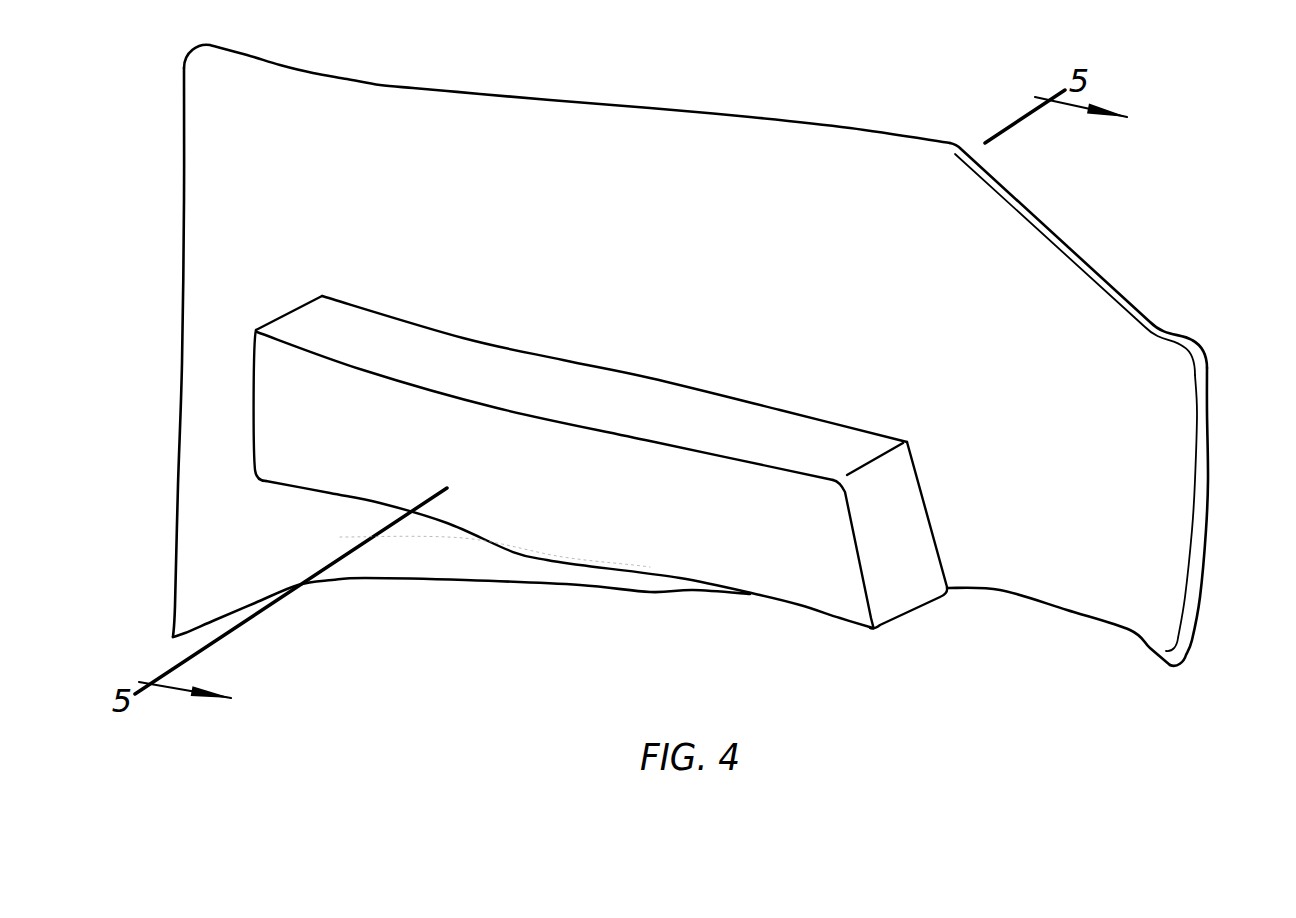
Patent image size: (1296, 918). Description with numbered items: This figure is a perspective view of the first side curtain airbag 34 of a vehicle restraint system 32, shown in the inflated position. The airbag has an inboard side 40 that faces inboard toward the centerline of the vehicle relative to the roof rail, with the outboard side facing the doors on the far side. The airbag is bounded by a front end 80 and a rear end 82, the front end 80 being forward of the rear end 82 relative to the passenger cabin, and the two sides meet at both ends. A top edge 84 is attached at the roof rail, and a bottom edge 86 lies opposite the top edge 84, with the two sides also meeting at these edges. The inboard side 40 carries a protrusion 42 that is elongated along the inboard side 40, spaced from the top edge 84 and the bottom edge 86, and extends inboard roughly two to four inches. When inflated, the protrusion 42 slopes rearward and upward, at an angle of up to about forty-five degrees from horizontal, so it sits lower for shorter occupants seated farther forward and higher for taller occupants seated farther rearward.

The restraint system 32 is at (897, 60).
The first side curtain airbag 34 is at (1108, 264).
The inboard side 40 is at (433, 548).
The protrusion 42 is at (592, 567).
The front end 80 is at (1207, 527).
The rear end 82 is at (184, 271).
The top edge 84 is at (633, 108).
The bottom edge 86 is at (494, 584).